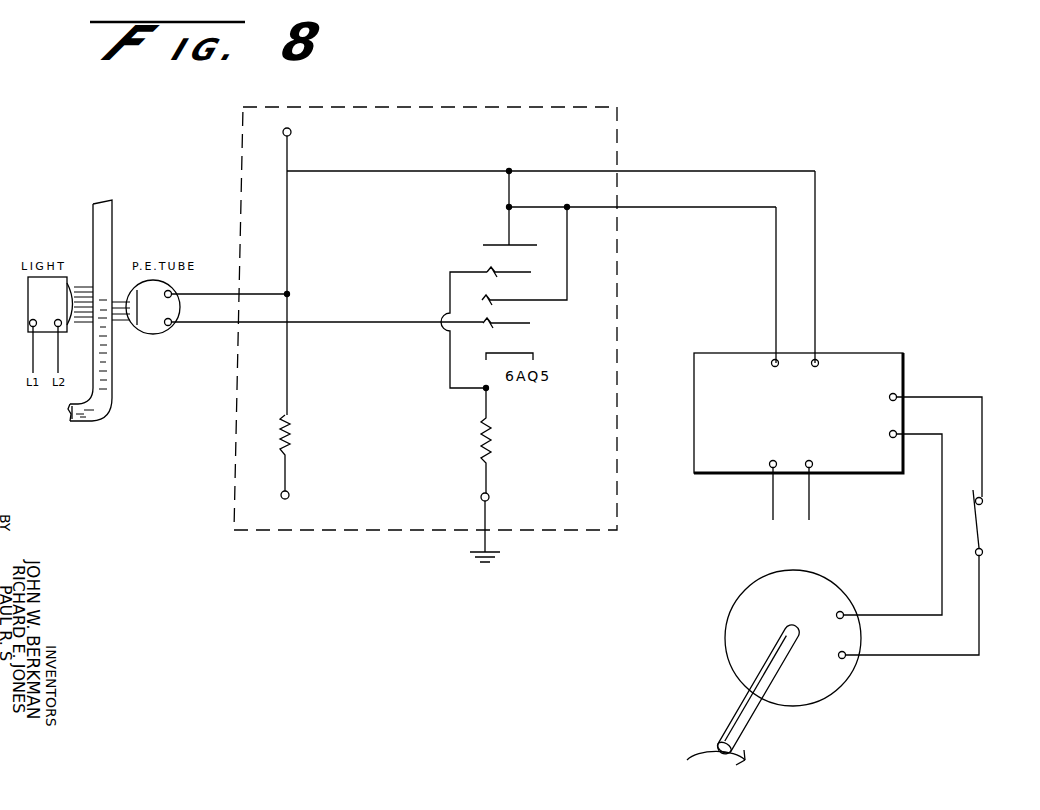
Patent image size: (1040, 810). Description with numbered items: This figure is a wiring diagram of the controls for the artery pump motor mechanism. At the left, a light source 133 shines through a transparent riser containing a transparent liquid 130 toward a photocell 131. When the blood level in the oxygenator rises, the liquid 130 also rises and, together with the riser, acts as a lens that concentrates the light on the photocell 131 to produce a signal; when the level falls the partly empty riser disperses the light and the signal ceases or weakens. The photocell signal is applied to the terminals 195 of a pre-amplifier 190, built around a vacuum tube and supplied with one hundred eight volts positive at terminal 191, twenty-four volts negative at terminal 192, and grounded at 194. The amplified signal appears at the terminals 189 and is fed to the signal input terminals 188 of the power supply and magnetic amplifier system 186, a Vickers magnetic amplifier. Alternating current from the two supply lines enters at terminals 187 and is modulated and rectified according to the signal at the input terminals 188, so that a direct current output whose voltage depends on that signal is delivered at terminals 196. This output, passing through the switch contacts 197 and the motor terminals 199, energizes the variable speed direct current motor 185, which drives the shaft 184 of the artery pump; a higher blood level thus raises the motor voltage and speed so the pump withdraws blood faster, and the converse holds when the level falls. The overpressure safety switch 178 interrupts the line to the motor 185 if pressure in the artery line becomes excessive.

The transparent liquid 130 is at (98, 412).
The photocell 131 is at (147, 332).
The light source 133 is at (100, 222).
The overpressure safety switch 178 is at (975, 512).
The shaft 184 is at (737, 712).
The variable speed direct current motor 185 is at (738, 607).
The power supply and magnetic amplifier system 186 is at (878, 372).
The alternating current terminals 187 is at (806, 467).
The signal input terminals 188 is at (779, 361).
The pre-amplifier output terminals 189 is at (567, 205).
The pre-amplifier 190 is at (622, 110).
The positive supply terminal 191 is at (283, 135).
The negative supply terminal 192 is at (281, 495).
The ground terminal 194 is at (481, 500).
The pre-amplifier input terminals 195 is at (290, 318).
The direct current output terminals 196 is at (896, 431).
The switch 197 is at (982, 547).
The motor terminals 199 is at (844, 616).